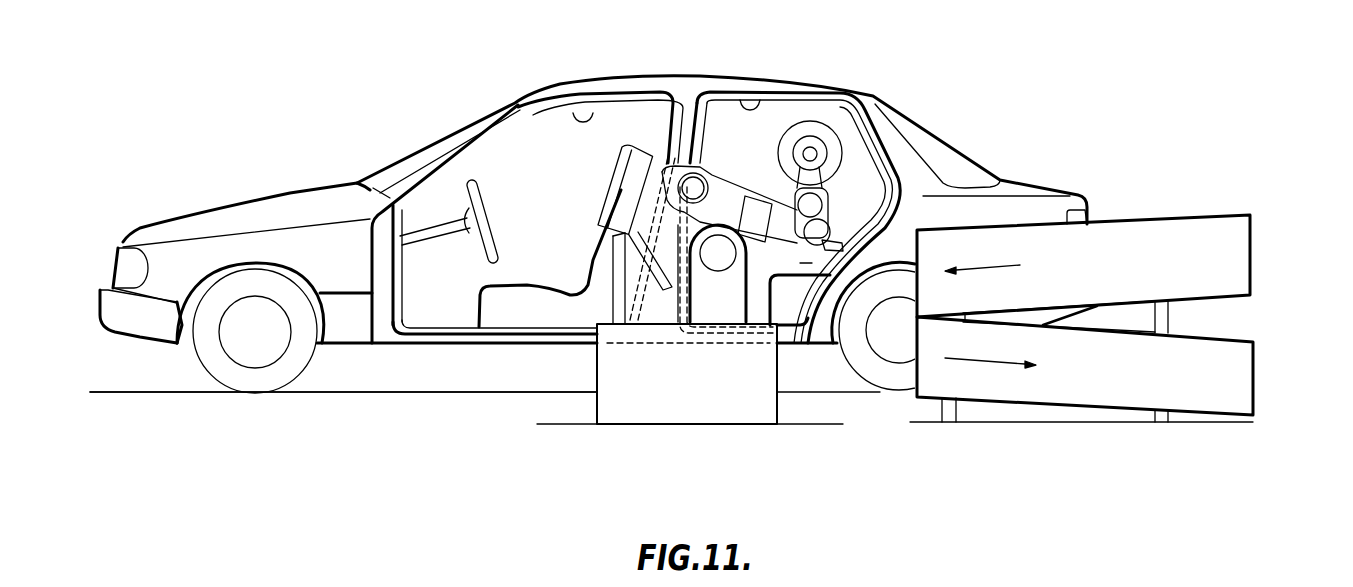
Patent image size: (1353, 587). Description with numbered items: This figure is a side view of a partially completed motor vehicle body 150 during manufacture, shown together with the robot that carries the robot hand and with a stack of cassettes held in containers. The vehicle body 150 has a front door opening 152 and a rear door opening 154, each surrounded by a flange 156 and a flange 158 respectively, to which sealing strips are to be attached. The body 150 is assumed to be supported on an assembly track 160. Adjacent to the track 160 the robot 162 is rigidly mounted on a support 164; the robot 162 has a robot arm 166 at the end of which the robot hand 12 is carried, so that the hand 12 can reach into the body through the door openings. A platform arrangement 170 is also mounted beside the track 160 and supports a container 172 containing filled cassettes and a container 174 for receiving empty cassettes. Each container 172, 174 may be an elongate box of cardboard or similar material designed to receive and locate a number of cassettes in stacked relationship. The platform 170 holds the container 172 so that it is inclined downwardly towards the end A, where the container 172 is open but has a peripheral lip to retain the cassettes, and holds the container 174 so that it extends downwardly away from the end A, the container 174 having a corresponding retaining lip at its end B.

The motor vehicle body 150 is at (923, 114).
The front door opening 152 is at (532, 187).
The rear door opening 154 is at (873, 195).
The robot hand 12 is at (836, 213).
The flange 156 is at (606, 107).
The flange 158 is at (755, 105).
The assembly track 160 is at (318, 398).
The robot 162 is at (617, 403).
The support 164 is at (667, 427).
The robot arm 166 is at (792, 228).
The platform arrangement 170 is at (1168, 322).
The container 172 is at (1102, 270).
The container 174 is at (1100, 378).
The end A is at (912, 372).
The end B is at (1250, 252).